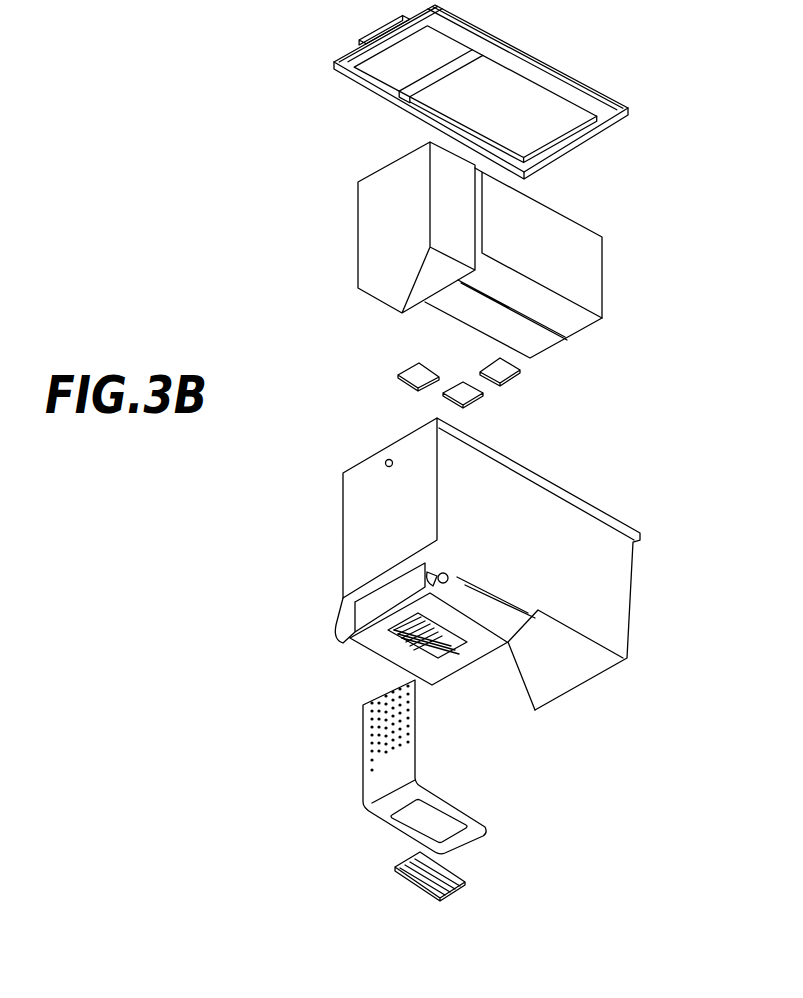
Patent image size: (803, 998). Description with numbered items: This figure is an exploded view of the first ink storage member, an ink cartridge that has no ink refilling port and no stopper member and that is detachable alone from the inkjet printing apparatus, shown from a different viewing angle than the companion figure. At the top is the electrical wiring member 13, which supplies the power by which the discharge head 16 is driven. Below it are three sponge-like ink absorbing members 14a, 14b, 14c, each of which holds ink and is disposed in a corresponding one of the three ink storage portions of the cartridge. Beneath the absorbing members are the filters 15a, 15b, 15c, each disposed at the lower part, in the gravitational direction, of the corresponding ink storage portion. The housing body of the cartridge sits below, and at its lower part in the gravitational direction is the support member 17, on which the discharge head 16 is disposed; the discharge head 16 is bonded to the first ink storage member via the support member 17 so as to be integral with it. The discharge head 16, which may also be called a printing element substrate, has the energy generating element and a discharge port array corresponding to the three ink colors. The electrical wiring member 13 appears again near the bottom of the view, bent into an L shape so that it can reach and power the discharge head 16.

The electrical wiring member 13 is at (560, 77).
The ink absorbing member 14a is at (388, 217).
The ink absorbing member 14b is at (580, 280).
The ink absorbing member 14c is at (540, 342).
The filter 15a is at (407, 382).
The filter 15b is at (498, 375).
The filter 15c is at (466, 400).
The discharge head 16 is at (468, 882).
The support member 17 is at (455, 675).